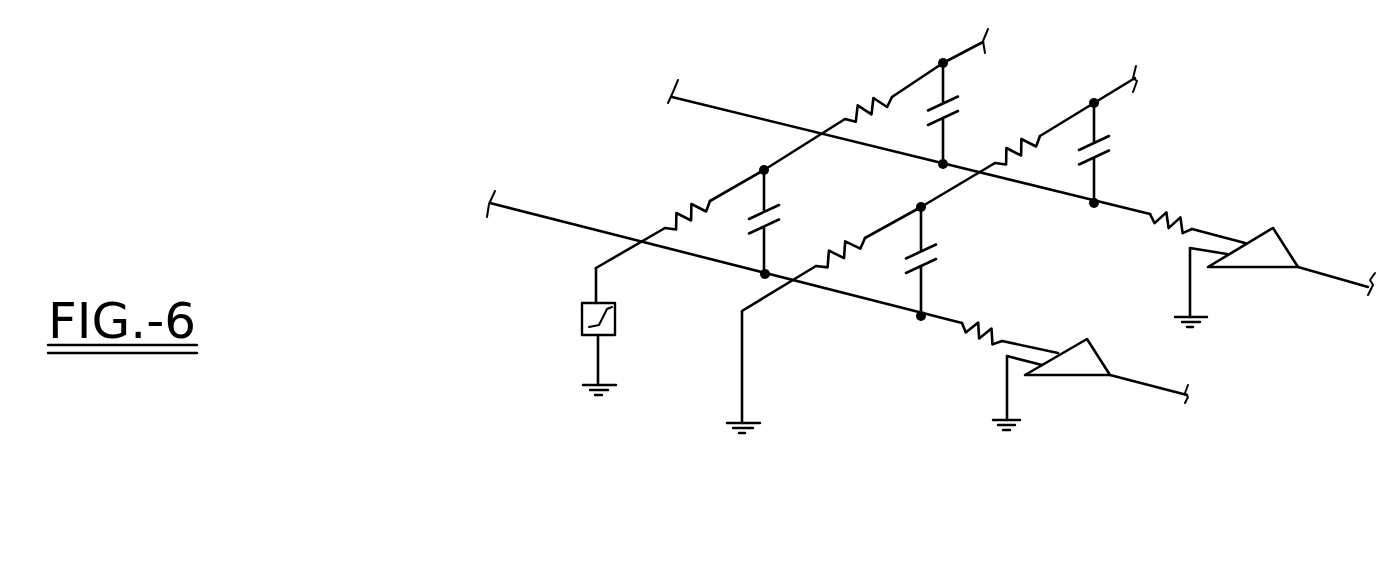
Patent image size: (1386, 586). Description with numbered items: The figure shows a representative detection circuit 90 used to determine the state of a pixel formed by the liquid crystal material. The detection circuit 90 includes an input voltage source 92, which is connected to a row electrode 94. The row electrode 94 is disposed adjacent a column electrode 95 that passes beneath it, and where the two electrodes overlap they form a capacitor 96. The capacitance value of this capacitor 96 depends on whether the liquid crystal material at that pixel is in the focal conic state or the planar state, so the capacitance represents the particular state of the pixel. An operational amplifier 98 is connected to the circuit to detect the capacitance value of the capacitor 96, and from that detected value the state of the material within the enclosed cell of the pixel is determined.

The detection circuit 90 is at (545, 140).
The input voltage source 92 is at (582, 326).
The row electrode 94 is at (595, 273).
The column electrode 95 is at (892, 310).
The capacitor 96 is at (773, 207).
The operational amplifier 98 is at (1077, 377).